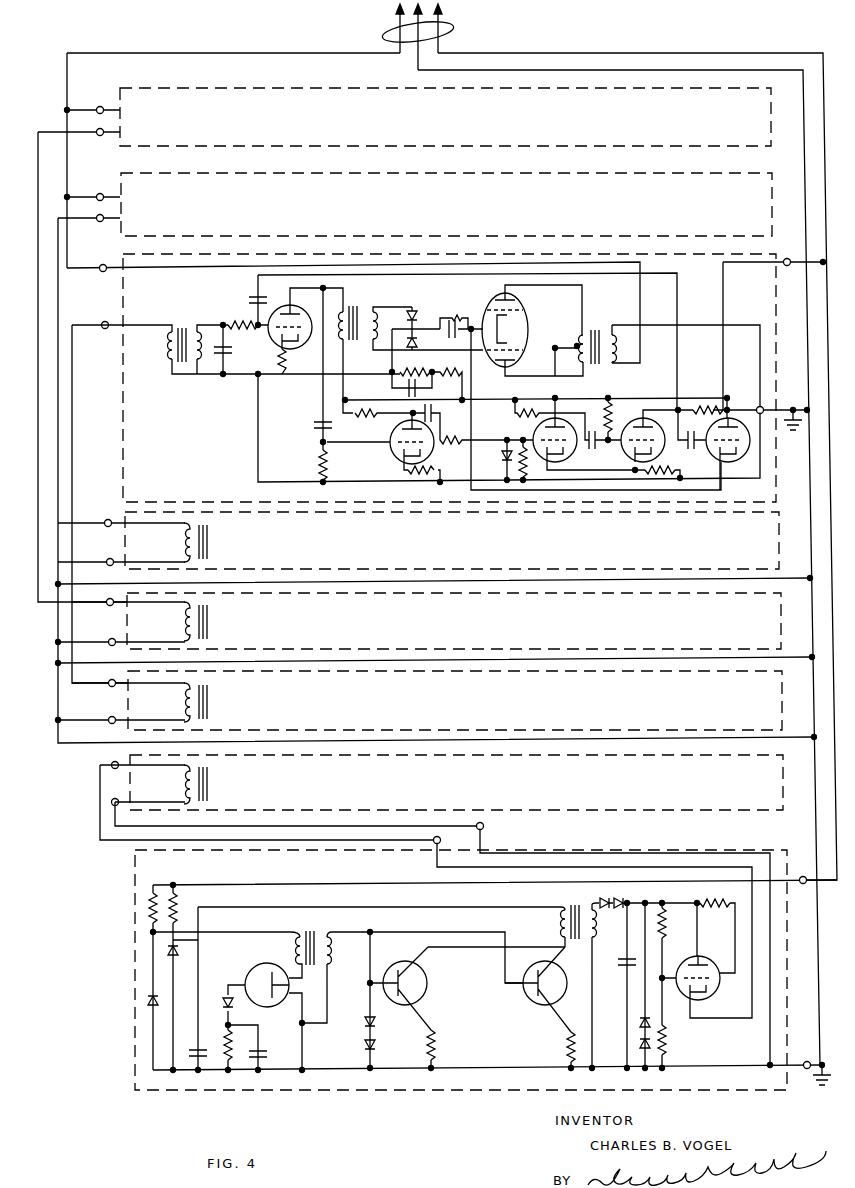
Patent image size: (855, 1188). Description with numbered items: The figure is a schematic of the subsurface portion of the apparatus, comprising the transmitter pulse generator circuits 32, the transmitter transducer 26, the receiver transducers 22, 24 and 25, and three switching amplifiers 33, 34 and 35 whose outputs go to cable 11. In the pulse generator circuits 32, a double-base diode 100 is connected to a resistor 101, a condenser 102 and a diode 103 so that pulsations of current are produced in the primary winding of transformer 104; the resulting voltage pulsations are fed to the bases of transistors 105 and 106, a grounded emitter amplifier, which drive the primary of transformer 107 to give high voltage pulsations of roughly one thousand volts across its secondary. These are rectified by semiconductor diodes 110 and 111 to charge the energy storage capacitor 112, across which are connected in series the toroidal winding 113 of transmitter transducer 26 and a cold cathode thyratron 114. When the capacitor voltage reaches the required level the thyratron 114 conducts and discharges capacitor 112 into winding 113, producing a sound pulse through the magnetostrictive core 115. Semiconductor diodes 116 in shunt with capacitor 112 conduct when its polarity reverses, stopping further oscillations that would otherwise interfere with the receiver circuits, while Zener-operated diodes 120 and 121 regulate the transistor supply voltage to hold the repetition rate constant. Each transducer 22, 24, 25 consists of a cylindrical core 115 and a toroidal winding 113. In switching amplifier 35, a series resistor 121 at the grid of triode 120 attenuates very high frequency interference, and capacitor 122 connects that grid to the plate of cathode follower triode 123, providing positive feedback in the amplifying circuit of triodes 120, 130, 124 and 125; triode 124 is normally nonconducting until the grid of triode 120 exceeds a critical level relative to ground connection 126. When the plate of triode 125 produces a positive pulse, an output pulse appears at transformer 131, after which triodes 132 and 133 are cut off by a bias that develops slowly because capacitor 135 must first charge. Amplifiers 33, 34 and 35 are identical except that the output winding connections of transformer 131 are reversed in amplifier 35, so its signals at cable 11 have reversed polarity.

The cable 11 is at (452, 26).
The switching amplifier 33 is at (248, 90).
The switching amplifier 34 is at (235, 175).
The switching amplifier 35 is at (237, 255).
The receiver transducer 22 is at (300, 513).
The receiver transducer 24 is at (300, 596).
The receiver transducer 25 is at (300, 674).
The transmitter transducer 26 is at (296, 758).
The transmitter pulse generator circuits 32 is at (278, 853).
The toroidal winding 113 is at (184, 545).
The core 115 is at (215, 543).
The triode 120 is at (181, 962).
The resistor 121 is at (230, 324).
The capacitor 122 is at (252, 301).
The triode 130 is at (455, 315).
The transformer 131 is at (605, 330).
The triode 132 is at (527, 304).
The triode 133 is at (527, 346).
The capacitor 135 is at (417, 338).
The triode 124 is at (555, 440).
The triode 125 is at (643, 440).
The triode 123 is at (728, 440).
The ground connection 126 is at (763, 408).
The double-base diode 100 is at (267, 985).
The resistor 101 is at (242, 1045).
The condenser 102 is at (264, 1052).
The diode 103 is at (231, 1008).
The transformer 104 is at (314, 936).
The transistor 105 is at (407, 988).
The transistor 106 is at (547, 989).
The transformer 107 is at (578, 905).
The semiconductor diode 110 is at (603, 897).
The semiconductor diode 111 is at (620, 898).
The energy storage capacitor 112 is at (624, 969).
The cold cathode thyratron 114 is at (703, 960).
The semiconductor diodes 116 is at (639, 1026).